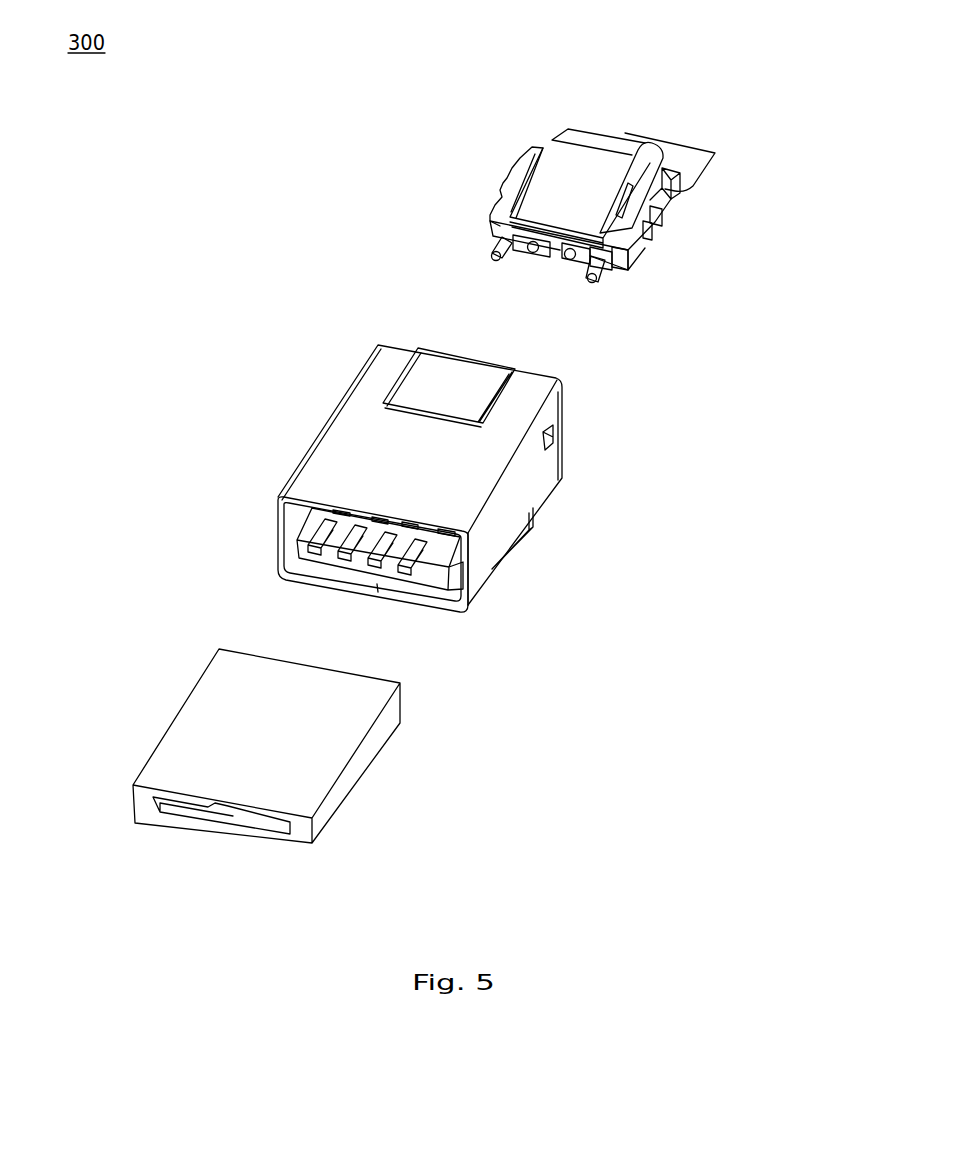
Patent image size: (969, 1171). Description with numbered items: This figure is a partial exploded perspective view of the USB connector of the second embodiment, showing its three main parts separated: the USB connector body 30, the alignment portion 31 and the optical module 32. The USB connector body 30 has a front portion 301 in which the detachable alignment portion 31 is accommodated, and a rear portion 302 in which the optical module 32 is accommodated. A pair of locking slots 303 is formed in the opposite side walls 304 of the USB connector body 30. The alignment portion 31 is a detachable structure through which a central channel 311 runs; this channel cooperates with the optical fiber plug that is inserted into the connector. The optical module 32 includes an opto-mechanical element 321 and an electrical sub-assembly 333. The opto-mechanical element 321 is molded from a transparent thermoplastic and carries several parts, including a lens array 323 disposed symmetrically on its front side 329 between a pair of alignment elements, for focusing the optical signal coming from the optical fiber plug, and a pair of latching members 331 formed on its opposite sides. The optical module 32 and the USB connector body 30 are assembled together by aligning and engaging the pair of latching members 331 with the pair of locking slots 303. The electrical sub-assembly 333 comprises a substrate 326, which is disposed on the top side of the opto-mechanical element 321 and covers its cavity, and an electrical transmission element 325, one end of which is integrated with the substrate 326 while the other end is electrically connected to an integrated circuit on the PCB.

The USB connector body 30 is at (296, 400).
The front portion 301 is at (468, 619).
The rear portion 302 is at (579, 464).
The locking slots 303 is at (552, 449).
The side walls 304 is at (497, 538).
The alignment portion 31 is at (153, 701).
The central channel 311 is at (267, 827).
The optical module 32 is at (484, 162).
The opto-mechanical element 321 is at (672, 200).
The lens array 323 is at (570, 262).
The electrical transmission element 325 is at (690, 150).
The substrate 326 is at (565, 182).
The front side 329 is at (620, 257).
The latching members 331 is at (653, 230).
The electrical sub-assembly 333 is at (594, 178).